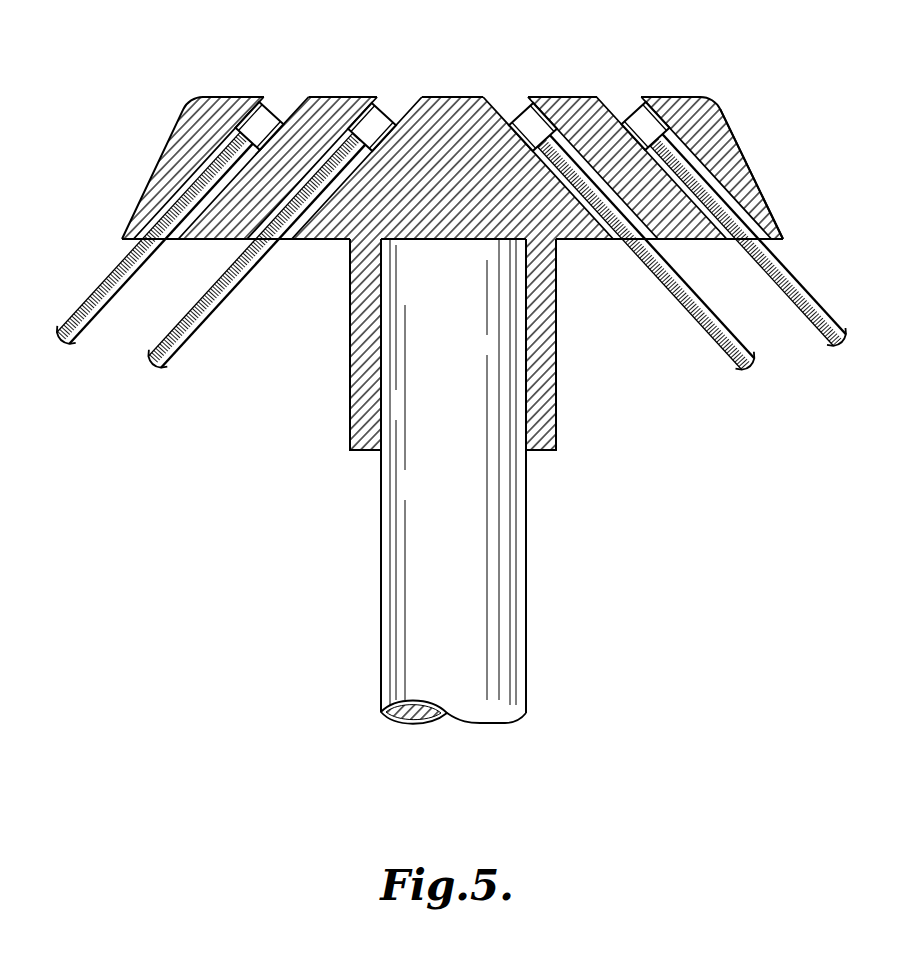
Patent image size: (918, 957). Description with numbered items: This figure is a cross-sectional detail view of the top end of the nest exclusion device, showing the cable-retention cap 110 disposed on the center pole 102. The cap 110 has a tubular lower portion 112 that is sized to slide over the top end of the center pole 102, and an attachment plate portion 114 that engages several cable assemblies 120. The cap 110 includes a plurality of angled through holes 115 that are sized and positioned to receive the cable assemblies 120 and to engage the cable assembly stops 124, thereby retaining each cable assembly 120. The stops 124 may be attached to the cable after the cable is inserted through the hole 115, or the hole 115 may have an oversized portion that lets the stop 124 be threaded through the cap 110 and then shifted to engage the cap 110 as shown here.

The center pole 102 is at (382, 533).
The cable-retention cap 110 is at (703, 96).
The tubular lower portion 112 is at (557, 430).
The attachment plate portion 114 is at (746, 153).
The angled through holes 115 is at (186, 198).
The cable assemblies 120 is at (95, 290).
The cable assembly stops 124 is at (270, 110).